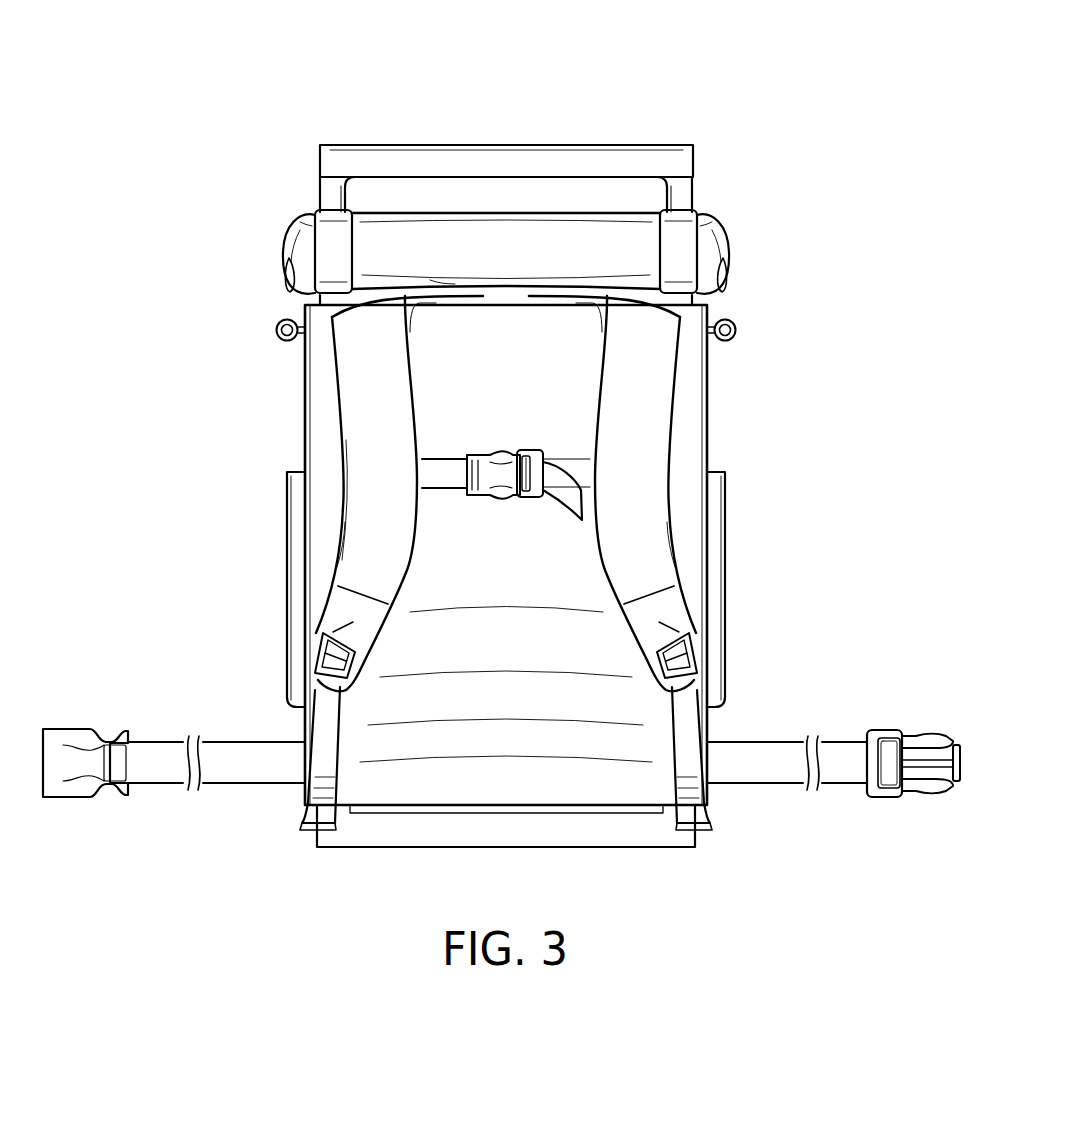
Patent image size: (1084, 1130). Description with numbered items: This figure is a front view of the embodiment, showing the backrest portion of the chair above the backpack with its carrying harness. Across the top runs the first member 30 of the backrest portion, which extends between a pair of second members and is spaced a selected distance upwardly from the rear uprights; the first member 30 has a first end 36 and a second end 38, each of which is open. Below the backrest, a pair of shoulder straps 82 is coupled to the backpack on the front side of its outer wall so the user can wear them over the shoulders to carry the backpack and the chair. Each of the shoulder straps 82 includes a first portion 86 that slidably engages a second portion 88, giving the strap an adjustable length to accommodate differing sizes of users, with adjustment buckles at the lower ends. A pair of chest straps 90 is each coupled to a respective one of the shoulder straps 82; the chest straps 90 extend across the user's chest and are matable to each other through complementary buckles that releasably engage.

The first member 30 is at (537, 160).
The first end 36 is at (318, 156).
The second end 38 is at (695, 165).
The shoulder straps 82 is at (350, 373).
The first portion 86 is at (372, 488).
The second portion 88 is at (310, 714).
The chest straps 90 is at (442, 468).